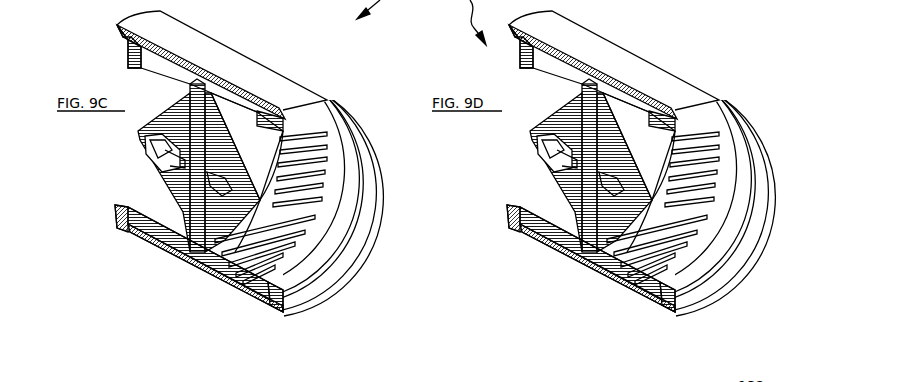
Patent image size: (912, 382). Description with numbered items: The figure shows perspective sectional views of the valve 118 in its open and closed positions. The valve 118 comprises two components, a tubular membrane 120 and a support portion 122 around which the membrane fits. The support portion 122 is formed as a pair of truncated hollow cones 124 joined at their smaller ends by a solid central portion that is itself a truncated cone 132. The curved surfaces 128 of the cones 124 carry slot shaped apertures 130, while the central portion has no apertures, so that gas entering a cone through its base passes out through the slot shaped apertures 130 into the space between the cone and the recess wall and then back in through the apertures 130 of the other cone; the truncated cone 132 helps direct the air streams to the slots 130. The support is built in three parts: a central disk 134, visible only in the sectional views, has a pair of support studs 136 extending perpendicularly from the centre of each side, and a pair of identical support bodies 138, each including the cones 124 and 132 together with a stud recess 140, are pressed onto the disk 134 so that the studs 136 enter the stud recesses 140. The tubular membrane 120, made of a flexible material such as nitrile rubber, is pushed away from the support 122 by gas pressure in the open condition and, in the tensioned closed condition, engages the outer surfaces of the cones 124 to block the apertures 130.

In FIG. 9C, the valve 118 is at (337, 381).
In FIG. 9C, the tubular membrane 120 is at (202, 48).
In FIG. 9D, the tubular membrane 120 is at (623, 65).
In FIG. 9C, the support portion 122 is at (117, 208).
In FIG. 9D, the support portion 122 is at (638, 168).
In FIG. 9C, the truncated hollow cones 124 is at (143, 223).
In FIG. 9D, the truncated hollow cones 124 is at (572, 279).
In FIG. 9C, the curved surfaces 128 is at (333, 215).
In FIG. 9D, the curved surfaces 128 is at (749, 175).
In FIG. 9C, the slot shaped apertures 130 is at (300, 217).
In FIG. 9D, the slot shaped apertures 130 is at (731, 250).
In FIG. 9C, the truncated cone 132 is at (257, 147).
In FIG. 9D, the truncated cone 132 is at (550, 172).
In FIG. 9C, the central disk 134 is at (193, 243).
In FIG. 9D, the central disk 134 is at (542, 204).
In FIG. 9C, the support studs 136 is at (117, 203).
In FIG. 9D, the support studs 136 is at (644, 204).
In FIG. 9C, the support bodies 138 is at (133, 57).
In FIG. 9D, the support bodies 138 is at (474, 50).
In FIG. 9C, the stud recess 140 is at (155, 145).
In FIG. 9D, the stud recess 140 is at (519, 165).